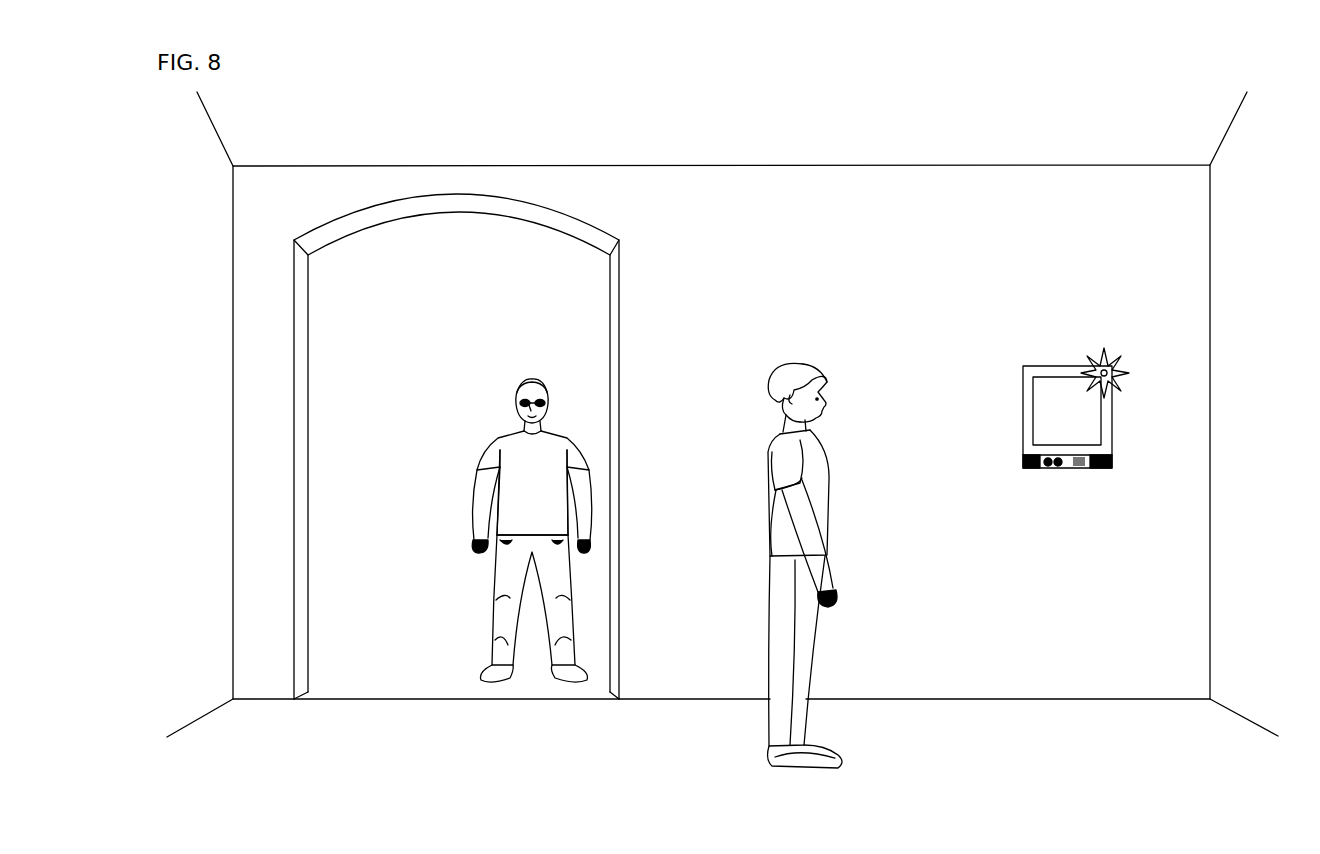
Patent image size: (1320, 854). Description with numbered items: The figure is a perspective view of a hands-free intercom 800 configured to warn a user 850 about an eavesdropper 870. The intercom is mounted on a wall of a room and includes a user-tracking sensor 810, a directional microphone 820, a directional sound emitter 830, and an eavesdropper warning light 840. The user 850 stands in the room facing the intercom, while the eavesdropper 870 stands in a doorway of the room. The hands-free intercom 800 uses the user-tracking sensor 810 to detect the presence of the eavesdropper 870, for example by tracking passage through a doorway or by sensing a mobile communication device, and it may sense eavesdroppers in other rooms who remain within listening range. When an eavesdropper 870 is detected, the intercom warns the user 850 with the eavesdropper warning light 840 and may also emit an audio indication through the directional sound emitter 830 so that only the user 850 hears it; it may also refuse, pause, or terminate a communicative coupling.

The hands-free intercom 800 is at (1092, 290).
The user-tracking sensor 810 is at (1055, 471).
The directional microphone 820 is at (1075, 471).
The directional sound emitter 830 is at (1030, 471).
The eavesdropper warning light 840 is at (1118, 366).
The user 850 is at (803, 364).
The eavesdropper 870 is at (531, 381).